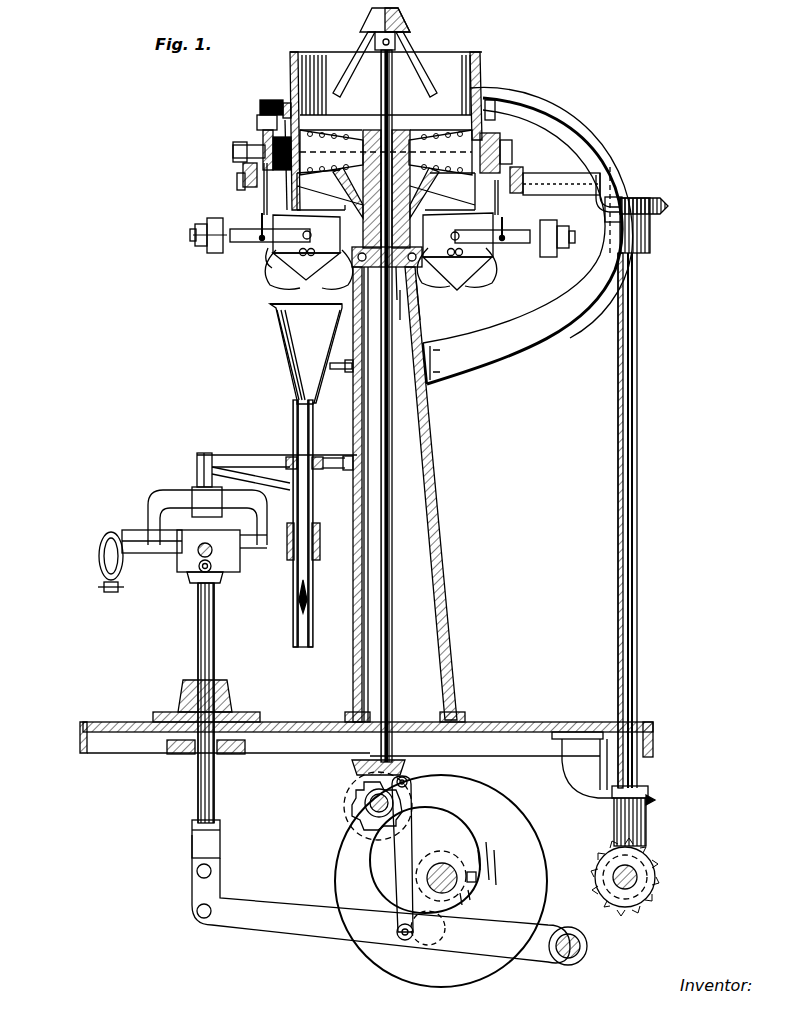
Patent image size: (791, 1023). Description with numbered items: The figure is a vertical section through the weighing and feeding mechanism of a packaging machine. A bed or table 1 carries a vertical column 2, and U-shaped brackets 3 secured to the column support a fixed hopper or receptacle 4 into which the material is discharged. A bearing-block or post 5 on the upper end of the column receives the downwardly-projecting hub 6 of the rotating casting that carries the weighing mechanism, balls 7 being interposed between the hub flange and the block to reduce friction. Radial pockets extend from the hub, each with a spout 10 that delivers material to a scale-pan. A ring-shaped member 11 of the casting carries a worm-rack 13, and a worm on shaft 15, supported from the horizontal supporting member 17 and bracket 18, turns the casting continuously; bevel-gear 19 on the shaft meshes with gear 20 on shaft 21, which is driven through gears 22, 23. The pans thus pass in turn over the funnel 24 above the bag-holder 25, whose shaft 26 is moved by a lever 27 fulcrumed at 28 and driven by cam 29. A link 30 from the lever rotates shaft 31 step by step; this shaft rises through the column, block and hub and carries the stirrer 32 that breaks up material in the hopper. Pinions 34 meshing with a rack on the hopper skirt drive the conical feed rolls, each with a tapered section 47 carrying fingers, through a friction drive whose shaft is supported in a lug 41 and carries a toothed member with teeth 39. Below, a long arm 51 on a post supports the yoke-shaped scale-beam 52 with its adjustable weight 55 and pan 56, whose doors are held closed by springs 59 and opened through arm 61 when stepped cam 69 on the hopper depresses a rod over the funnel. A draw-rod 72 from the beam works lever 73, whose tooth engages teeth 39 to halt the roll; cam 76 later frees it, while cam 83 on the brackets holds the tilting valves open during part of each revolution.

The bed or table 1 is at (556, 728).
The vertical column 2 is at (430, 648).
The U-shaped brackets 3 is at (470, 358).
The hopper or receptacle 4 is at (453, 90).
The bearing-block or post 5 is at (412, 222).
The hub 6 is at (363, 200).
The balls 7 is at (414, 298).
The spout 10 is at (355, 190).
The ring-shaped member 11 is at (505, 205).
The worm-rack 13 is at (237, 184).
The shaft 15 is at (548, 175).
The arm or horizontally-disposed supporting member 17 is at (538, 175).
The bracket 18 is at (585, 225).
The bevel-gear 19 is at (612, 172).
The bevel-gear 20 is at (655, 206).
The shaft 21 is at (636, 346).
The gear 22 is at (648, 840).
The gear 23 is at (640, 883).
The funnel 24 is at (300, 346).
The bag-holder 25 is at (308, 508).
The shaft 26 is at (212, 634).
The lever 27 is at (266, 912).
The fulcrum 28 is at (568, 960).
The cam 29 is at (500, 883).
The link 30 is at (375, 850).
The shaft 31 is at (388, 680).
The stirrer 32 is at (410, 44).
The pinions 34 is at (292, 180).
The teeth 39 is at (243, 175).
The lug or projection 41 is at (262, 147).
The tapered section 47 is at (330, 150).
The long arm 51 is at (262, 243).
The yoke-shaped scale-beam 52 is at (270, 256).
The adjustable weight 55 is at (215, 253).
The pan 56 is at (383, 235).
The springs 59 is at (290, 270).
The arm 61 is at (292, 270).
The stepped cam 69 is at (257, 124).
The draw-rod 72 is at (260, 220).
The lever 73 is at (283, 112).
The cam 76 is at (260, 106).
The cam 83 is at (490, 125).